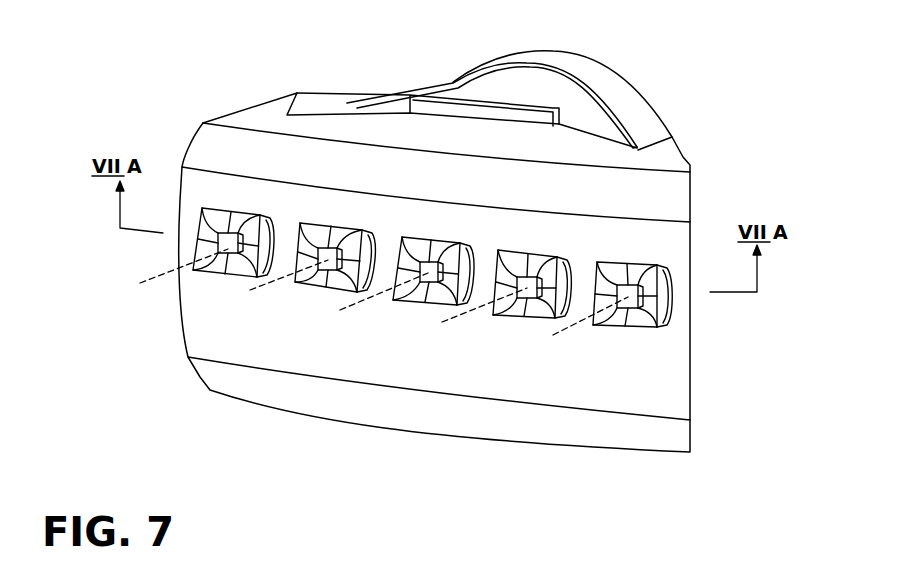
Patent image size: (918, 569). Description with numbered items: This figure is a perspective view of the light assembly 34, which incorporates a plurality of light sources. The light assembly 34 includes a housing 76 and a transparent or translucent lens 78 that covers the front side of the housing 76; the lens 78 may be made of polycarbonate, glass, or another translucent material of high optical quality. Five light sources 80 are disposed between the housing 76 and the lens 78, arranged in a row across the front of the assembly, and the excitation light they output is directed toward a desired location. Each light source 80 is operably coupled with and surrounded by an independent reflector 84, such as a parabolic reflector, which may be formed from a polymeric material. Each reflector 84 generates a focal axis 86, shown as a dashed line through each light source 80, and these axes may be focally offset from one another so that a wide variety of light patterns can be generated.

The light assembly 34 is at (360, 86).
The housing 76 is at (684, 156).
The lens 78 is at (667, 348).
The light sources 80 is at (205, 267).
The reflectors 84 is at (227, 252).
The focal axis 86 is at (157, 275).